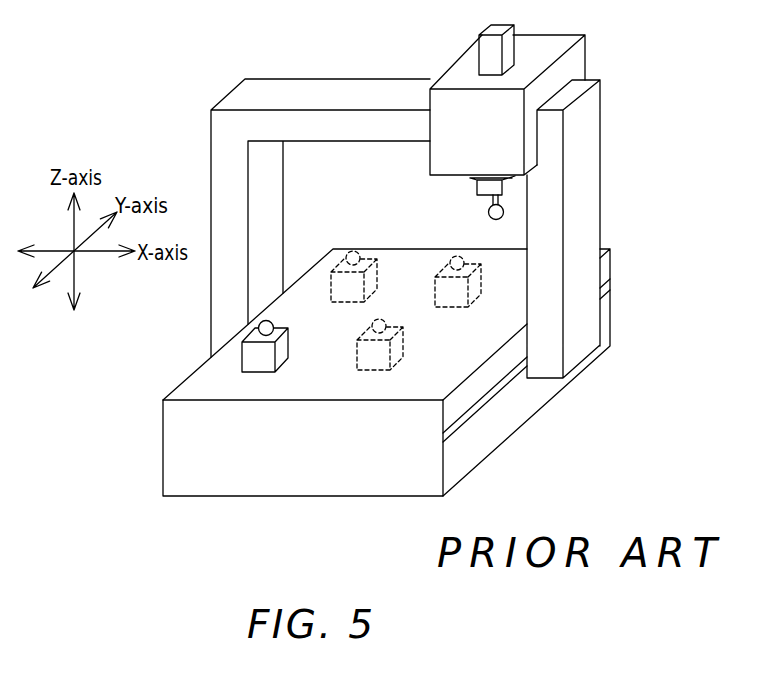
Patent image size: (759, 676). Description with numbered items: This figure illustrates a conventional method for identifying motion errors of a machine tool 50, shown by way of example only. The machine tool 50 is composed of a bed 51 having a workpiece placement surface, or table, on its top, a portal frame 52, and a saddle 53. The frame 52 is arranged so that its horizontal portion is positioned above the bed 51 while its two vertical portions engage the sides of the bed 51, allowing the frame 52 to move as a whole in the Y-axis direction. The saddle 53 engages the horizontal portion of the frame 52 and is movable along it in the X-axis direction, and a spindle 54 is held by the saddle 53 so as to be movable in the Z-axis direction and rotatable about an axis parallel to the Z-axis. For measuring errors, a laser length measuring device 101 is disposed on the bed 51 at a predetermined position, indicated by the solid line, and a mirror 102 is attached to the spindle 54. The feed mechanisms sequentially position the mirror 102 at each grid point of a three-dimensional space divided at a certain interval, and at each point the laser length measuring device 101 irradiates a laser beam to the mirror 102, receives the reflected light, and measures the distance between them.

The machine tool 50 is at (645, 437).
The bed 51 is at (172, 447).
The portal frame 52 is at (595, 205).
The saddle 53 is at (578, 48).
The spindle 54 is at (476, 177).
The laser length measuring device 101 is at (247, 353).
The mirror 102 is at (489, 213).